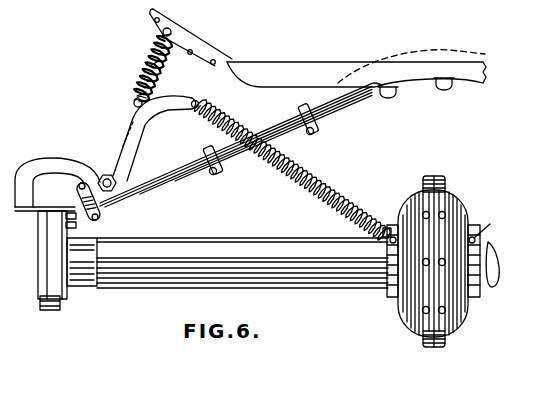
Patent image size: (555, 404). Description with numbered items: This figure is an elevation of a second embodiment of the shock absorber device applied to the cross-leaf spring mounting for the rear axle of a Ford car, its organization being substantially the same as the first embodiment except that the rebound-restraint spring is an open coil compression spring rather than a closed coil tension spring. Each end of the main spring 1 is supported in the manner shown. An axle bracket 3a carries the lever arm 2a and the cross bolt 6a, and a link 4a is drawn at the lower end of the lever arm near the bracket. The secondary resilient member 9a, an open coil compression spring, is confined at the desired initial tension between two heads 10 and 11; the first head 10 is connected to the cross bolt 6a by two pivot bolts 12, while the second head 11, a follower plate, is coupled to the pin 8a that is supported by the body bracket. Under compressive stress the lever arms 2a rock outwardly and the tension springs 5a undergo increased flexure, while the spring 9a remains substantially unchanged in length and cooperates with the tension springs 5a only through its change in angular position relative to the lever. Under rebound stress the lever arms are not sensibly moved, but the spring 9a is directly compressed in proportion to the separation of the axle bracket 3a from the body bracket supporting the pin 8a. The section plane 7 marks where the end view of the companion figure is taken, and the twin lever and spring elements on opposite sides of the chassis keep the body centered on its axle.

The main spring 1 is at (175, 177).
The lever arm 2a is at (143, 150).
The axle bracket 3a is at (70, 166).
The link 4a is at (107, 211).
The tension spring 5a is at (311, 168).
The cross bolt 6a is at (133, 103).
The section plane 7—7— 7 is at (38, 124).
The pin 8a is at (178, 33).
The secondary resilient member 9a is at (142, 60).
The head 10 is at (150, 34).
The head 11 is at (126, 85).
The pivot bolt 12 is at (168, 58).